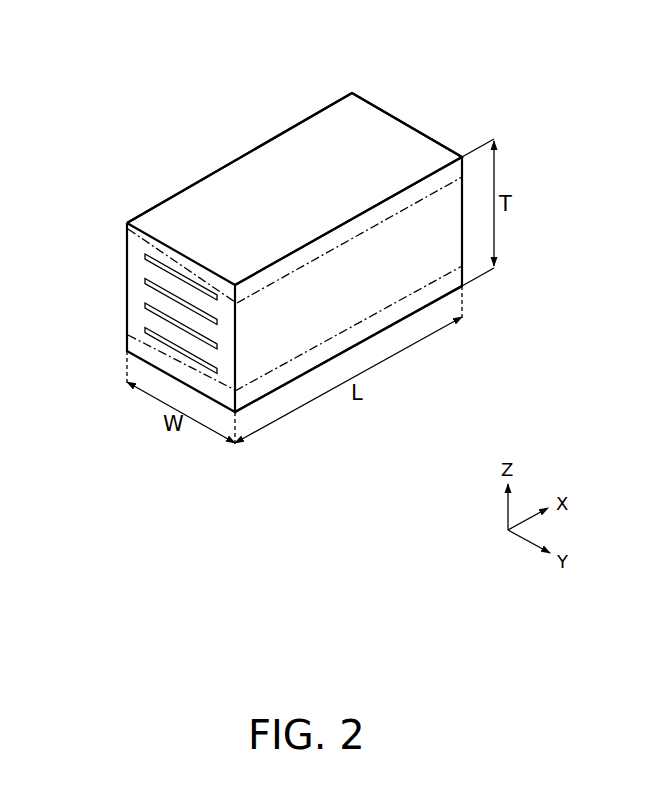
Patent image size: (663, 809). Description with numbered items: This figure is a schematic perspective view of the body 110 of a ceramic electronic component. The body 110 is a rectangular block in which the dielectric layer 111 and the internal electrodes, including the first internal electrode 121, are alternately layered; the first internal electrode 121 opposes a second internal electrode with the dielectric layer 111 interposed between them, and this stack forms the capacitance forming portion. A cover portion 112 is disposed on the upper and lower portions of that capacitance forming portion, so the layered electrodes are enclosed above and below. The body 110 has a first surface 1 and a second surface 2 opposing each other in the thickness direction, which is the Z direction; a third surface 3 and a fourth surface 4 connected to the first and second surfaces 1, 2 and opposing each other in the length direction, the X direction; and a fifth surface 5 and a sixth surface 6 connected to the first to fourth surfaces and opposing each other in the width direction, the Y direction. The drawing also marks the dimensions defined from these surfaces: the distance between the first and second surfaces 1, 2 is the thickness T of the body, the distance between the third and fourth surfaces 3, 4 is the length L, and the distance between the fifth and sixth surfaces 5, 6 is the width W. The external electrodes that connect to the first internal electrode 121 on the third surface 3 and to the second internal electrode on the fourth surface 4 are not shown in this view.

The first surface 1 is at (264, 352).
The second surface 2 is at (230, 176).
The third surface 3 is at (142, 297).
The fourth surface 4 is at (428, 145).
The fifth surface 5 is at (367, 304).
The sixth surface 6 is at (175, 211).
The body 110 is at (315, 142).
The dielectric layer 111 is at (152, 273).
The cover portion 112 is at (126, 220).
The first internal electrode 121 is at (153, 258).